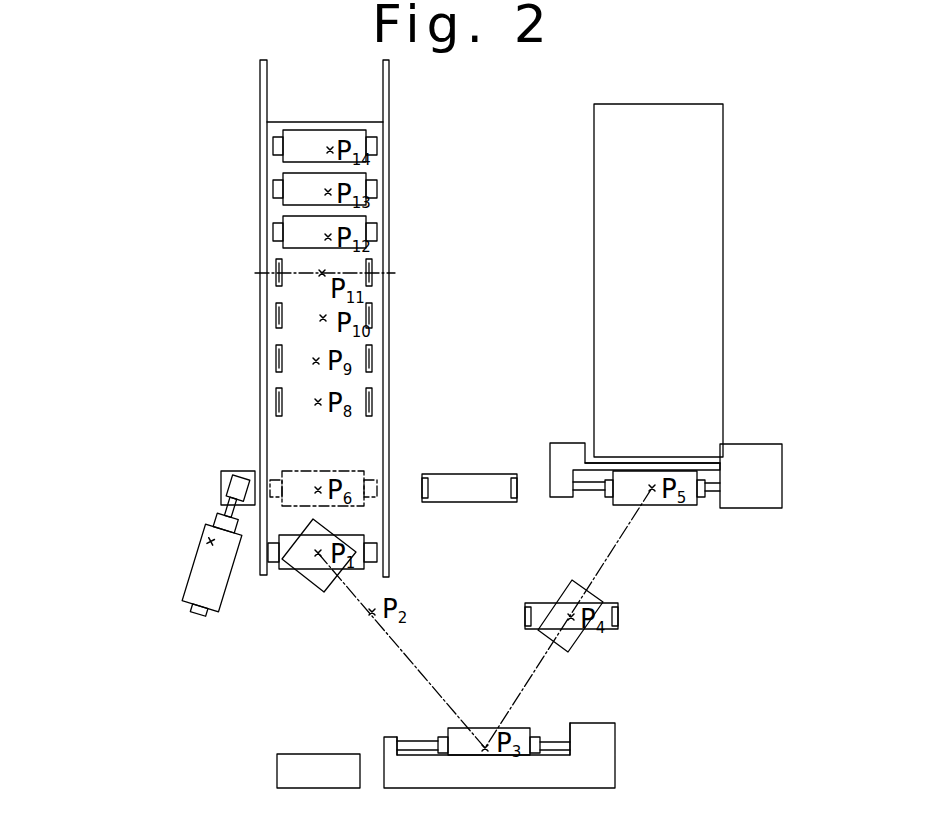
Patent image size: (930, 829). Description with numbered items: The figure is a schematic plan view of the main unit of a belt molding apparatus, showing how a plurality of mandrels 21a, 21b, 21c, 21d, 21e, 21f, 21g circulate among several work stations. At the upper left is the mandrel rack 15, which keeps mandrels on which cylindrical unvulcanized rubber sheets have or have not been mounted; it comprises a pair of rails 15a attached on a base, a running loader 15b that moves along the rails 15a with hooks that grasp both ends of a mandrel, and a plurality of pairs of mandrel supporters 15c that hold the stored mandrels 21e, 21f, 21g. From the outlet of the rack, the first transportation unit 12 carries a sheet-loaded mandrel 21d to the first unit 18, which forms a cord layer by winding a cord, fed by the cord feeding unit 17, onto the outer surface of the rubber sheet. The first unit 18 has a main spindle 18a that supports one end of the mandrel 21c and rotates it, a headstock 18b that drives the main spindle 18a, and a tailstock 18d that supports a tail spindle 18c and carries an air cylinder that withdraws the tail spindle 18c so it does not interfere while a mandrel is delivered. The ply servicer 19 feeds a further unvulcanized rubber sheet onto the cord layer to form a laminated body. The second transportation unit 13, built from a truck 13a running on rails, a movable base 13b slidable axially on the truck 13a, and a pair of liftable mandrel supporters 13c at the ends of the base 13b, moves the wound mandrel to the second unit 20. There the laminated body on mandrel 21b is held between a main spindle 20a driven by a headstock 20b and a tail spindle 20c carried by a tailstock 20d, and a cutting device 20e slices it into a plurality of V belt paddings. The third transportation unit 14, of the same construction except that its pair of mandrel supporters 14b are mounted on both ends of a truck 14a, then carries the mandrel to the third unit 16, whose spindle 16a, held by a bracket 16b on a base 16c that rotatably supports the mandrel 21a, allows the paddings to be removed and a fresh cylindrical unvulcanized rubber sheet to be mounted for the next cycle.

The first transportation unit 12 is at (321, 596).
The second transportation unit 13 is at (588, 618).
The truck 13a is at (567, 595).
The movable base 13b is at (607, 633).
The mandrel supporters 13c is at (527, 604).
The third transportation unit 14 is at (471, 474).
The truck 14a is at (468, 504).
The mandrel supporters 14b is at (423, 472).
The mandrel rack 15 is at (330, 318).
The rails 15a is at (260, 350).
The running loader 15b is at (397, 272).
The mandrel supporters 15c is at (272, 282).
The third unit 16 is at (216, 544).
The spindle 16a is at (226, 516).
The bracket 16b is at (222, 478).
The base 16c is at (238, 472).
The cord feeding unit 17 is at (277, 756).
The first unit 18 is at (497, 734).
The main spindle 18a is at (547, 740).
The headstock 18b is at (617, 741).
The tail spindle 18c is at (415, 738).
The tailstock 18d is at (384, 740).
The ply servicer 19 is at (594, 293).
The second unit 20 is at (666, 462).
The main spindle 20a is at (710, 497).
The headstock 20b is at (757, 502).
The tail spindle 20c is at (585, 492).
The tailstock 20d is at (558, 441).
The cutting device 20e is at (672, 461).
The mandrel 21a is at (206, 620).
The mandrel 21b is at (630, 470).
The mandrel 21c is at (462, 748).
The mandrel 21d is at (292, 572).
The mandrel 21e is at (374, 222).
The mandrel 21f is at (374, 178).
The mandrel 21g is at (374, 134).